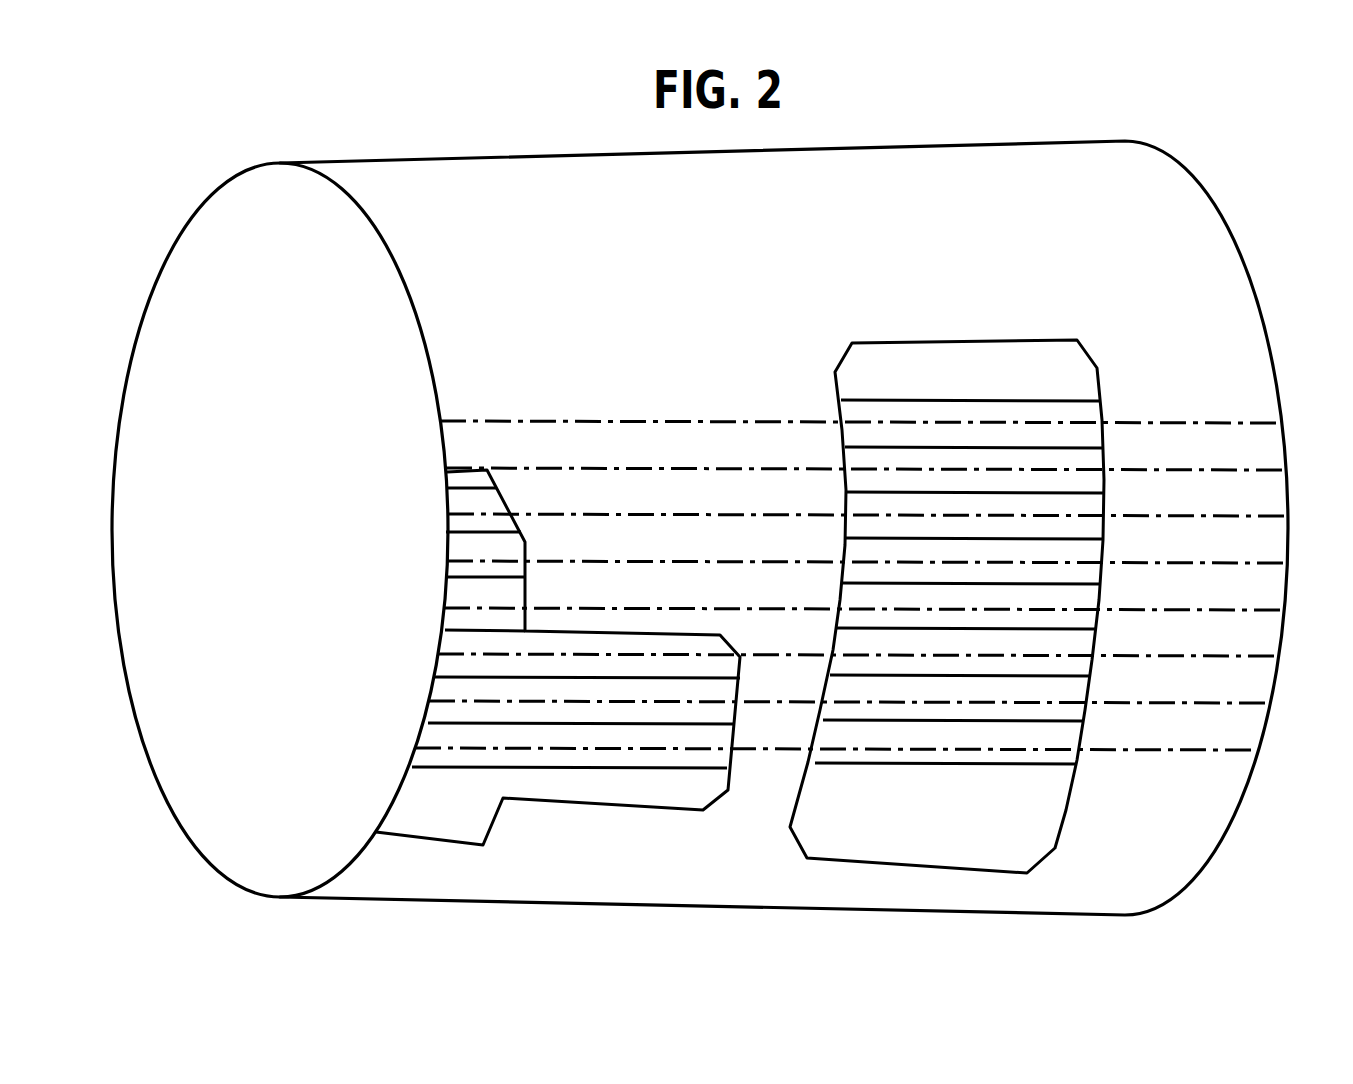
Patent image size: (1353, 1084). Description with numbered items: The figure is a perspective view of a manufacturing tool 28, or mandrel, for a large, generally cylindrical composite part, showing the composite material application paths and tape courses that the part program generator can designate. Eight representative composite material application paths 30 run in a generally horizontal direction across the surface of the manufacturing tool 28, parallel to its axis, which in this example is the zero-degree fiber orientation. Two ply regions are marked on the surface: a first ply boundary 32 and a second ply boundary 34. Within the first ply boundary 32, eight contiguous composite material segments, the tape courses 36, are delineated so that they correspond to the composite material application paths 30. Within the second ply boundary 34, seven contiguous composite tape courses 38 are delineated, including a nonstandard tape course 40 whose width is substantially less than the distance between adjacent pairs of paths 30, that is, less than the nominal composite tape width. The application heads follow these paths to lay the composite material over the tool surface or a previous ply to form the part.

The manufacturing tool 28 is at (577, 258).
The composite material application paths 30 is at (1187, 416).
The first ply boundary 32 is at (947, 571).
The second ply boundary 34 is at (556, 675).
The tape courses 36 is at (1034, 390).
The composite tape courses 38 is at (448, 798).
The nonstandard tape course 40 is at (463, 480).